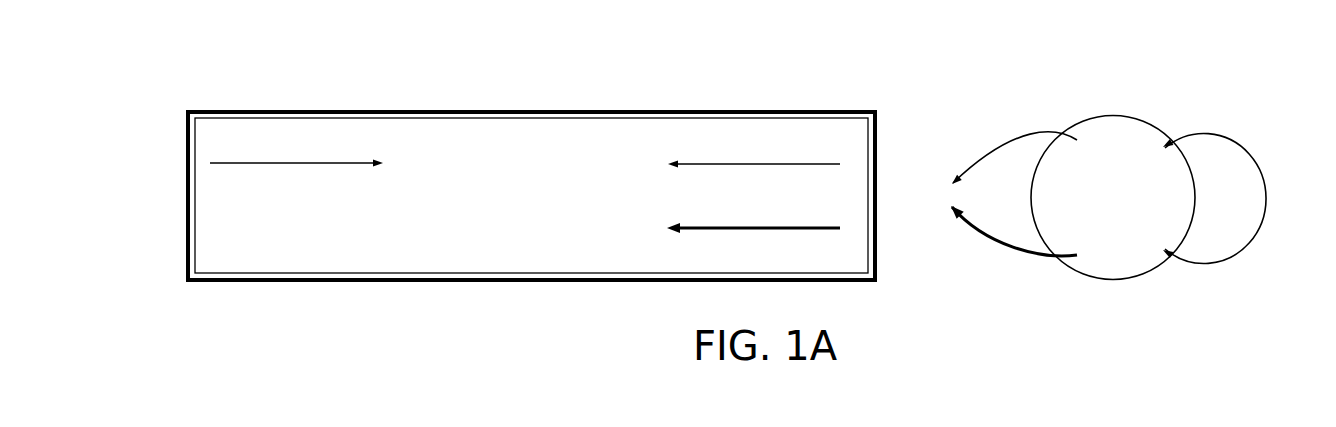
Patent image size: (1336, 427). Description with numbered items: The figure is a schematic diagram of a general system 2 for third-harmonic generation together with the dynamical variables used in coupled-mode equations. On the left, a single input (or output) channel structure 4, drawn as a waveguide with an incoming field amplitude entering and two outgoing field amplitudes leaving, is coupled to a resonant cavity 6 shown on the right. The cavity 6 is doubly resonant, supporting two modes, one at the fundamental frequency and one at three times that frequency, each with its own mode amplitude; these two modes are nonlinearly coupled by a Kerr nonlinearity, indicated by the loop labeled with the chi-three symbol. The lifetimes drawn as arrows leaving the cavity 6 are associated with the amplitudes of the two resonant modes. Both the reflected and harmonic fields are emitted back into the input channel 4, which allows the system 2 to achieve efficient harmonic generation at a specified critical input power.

The general system 2 is at (114, 72).
The input channel structure 4 is at (494, 101).
The doubly resonant cavity 6 is at (1105, 106).